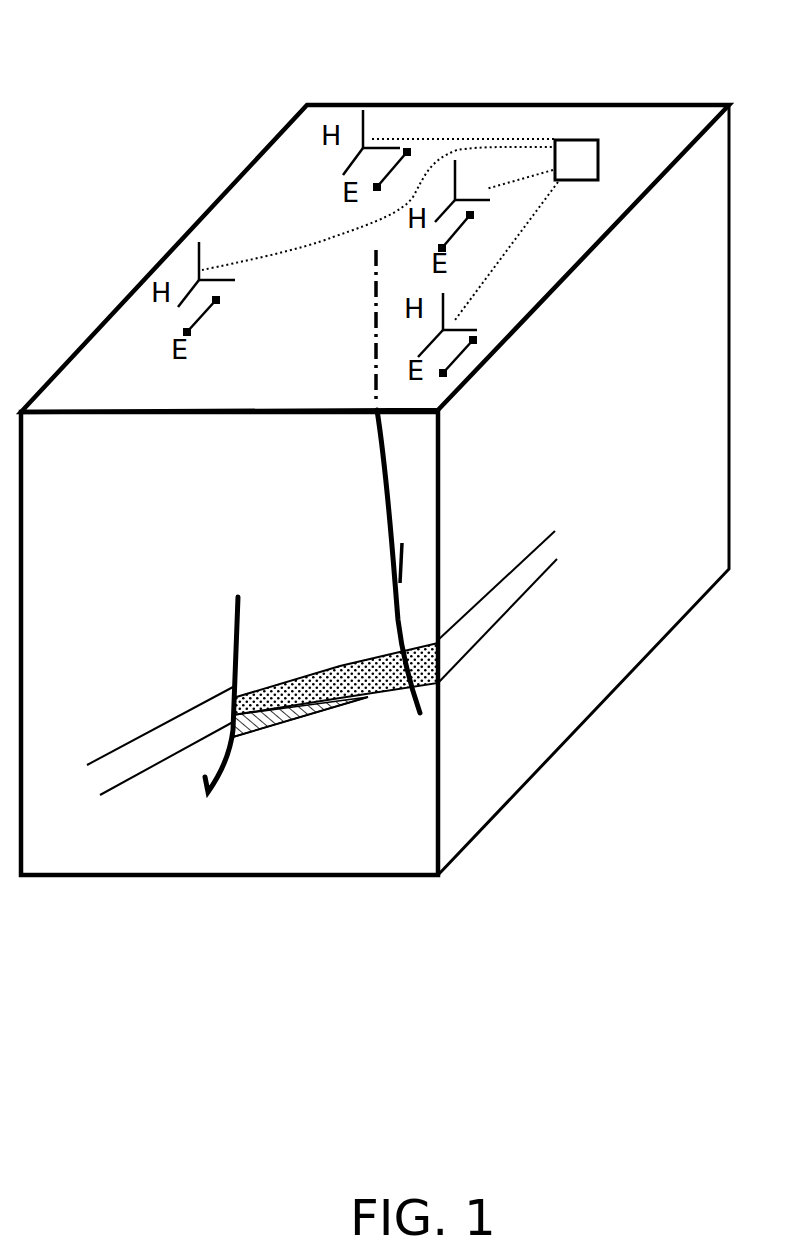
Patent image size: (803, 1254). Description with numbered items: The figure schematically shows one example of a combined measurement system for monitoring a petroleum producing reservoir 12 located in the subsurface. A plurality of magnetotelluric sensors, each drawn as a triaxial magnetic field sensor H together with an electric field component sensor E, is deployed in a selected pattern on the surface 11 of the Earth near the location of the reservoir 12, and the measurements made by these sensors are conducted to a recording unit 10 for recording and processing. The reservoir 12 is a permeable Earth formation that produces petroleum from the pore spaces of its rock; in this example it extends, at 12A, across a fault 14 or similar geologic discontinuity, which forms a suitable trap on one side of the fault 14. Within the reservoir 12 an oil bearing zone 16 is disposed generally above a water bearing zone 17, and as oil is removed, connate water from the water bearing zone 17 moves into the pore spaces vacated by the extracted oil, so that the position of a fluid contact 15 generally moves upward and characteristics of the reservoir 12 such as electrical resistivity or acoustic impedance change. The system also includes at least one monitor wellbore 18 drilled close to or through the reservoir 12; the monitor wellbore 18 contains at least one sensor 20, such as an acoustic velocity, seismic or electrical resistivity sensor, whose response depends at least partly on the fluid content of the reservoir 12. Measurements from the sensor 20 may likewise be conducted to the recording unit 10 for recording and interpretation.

The recording unit 10 is at (585, 146).
The surface of the Earth 11 is at (262, 202).
The petroleum producing reservoir 12 is at (293, 687).
The reservoir extension 12A is at (157, 747).
The fault 14 is at (232, 667).
The fluid contact 15 is at (268, 732).
The oil bearing zone 16 is at (357, 680).
The water bearing zone 17 is at (300, 722).
The monitor wellbore 18 is at (380, 473).
The sensor 20 is at (405, 562).